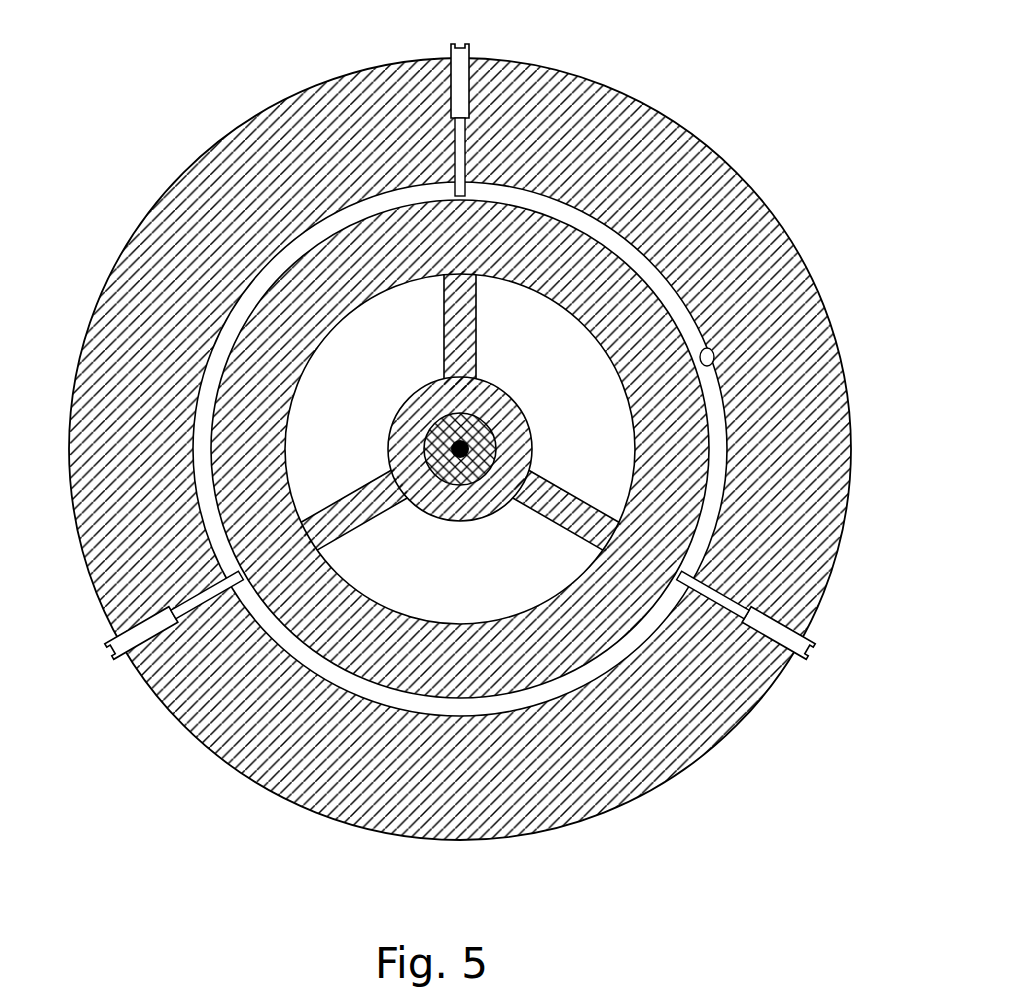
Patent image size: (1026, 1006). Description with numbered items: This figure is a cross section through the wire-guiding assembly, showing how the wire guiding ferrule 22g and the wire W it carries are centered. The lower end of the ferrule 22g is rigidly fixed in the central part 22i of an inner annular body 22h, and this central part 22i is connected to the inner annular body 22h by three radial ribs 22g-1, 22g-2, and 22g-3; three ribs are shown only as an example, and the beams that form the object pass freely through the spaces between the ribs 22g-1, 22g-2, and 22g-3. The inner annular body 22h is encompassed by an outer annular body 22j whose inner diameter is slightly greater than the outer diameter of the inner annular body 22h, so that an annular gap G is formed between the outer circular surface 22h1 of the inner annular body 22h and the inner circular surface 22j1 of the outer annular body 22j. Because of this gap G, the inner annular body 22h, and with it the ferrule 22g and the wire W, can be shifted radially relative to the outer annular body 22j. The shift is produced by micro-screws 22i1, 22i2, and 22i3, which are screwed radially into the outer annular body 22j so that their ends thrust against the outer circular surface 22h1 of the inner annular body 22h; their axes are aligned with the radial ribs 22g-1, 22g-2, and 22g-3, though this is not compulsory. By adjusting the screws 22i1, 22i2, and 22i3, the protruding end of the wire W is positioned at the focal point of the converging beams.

The wire guiding ferrule 22g is at (455, 415).
The radial rib 22g-1 is at (371, 503).
The radial rib 22g-2 is at (477, 330).
The radial rib 22g-3 is at (533, 510).
The inner annular body 22h is at (290, 303).
The outer circular surface of the inner annular body 22h1 is at (340, 227).
The central part of the inner annular body 22i is at (493, 450).
The micro-screw 22i1 is at (104, 655).
The micro-screw 22i2 is at (452, 43).
The micro-screw 22i3 is at (813, 657).
The outer annular body 22j is at (150, 288).
The inner circular surface of the outer annular body 22j1 is at (712, 348).
The wire W is at (503, 447).
The annular gap G is at (593, 672).